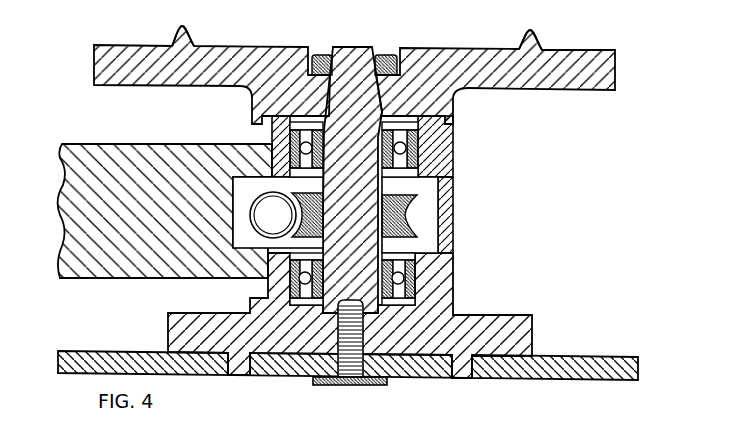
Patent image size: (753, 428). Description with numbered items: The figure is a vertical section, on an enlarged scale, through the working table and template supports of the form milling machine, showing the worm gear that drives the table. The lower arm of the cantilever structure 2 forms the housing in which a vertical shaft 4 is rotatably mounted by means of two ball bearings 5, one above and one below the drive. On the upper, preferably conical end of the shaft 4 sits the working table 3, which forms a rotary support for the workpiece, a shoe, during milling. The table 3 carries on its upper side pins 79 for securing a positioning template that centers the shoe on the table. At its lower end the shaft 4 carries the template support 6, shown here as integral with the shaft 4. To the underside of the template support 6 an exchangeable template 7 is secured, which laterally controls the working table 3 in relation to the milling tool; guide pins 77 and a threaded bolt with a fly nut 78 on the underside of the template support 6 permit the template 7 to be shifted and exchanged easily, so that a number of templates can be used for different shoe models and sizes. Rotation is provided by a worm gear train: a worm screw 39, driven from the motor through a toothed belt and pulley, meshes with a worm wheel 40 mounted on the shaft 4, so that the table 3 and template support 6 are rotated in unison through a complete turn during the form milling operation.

The cantilever structure 2 is at (56, 208).
The working table 3 is at (446, 48).
The vertical shaft 4 is at (346, 46).
The ball bearings 5 is at (416, 153).
The template support 6 is at (508, 353).
The exchangeable template 7 is at (572, 378).
The worm screw 39 is at (263, 236).
The worm wheel 40 is at (408, 218).
The guide pins 77 is at (250, 375).
The fly nut 78 is at (372, 385).
The pins 79 is at (186, 34).